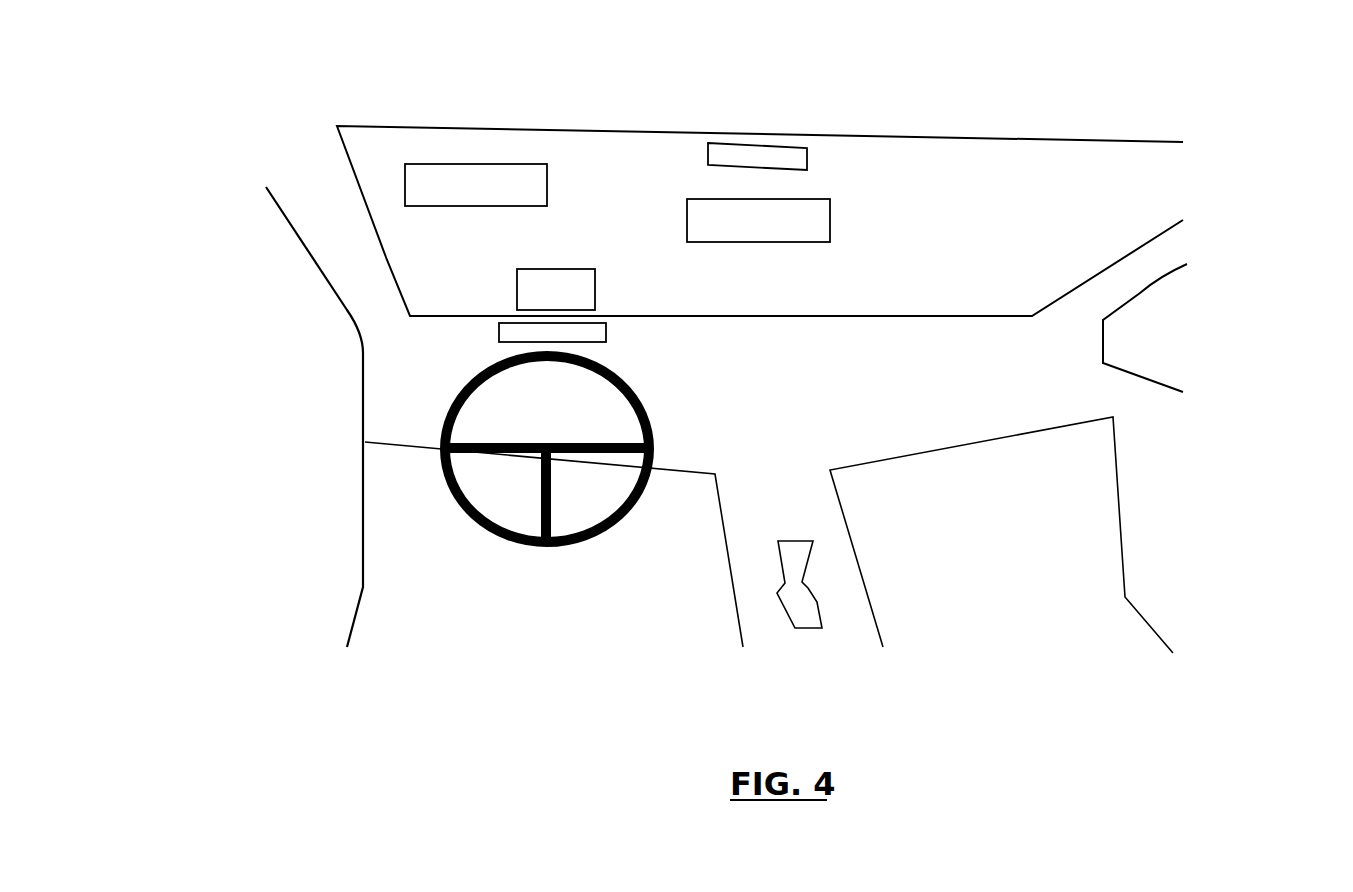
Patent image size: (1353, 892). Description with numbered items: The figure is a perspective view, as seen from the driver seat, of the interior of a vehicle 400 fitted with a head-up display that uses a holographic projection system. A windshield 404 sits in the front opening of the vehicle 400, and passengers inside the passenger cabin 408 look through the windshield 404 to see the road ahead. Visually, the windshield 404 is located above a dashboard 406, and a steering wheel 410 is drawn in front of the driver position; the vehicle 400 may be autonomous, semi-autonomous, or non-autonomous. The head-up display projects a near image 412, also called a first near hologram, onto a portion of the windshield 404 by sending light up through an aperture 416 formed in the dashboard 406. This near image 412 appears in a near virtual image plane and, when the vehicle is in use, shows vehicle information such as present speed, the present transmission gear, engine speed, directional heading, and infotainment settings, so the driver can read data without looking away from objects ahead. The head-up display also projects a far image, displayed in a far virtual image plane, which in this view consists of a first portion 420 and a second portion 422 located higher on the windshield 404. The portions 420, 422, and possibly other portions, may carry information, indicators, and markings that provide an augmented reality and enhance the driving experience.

The vehicle 400 is at (320, 175).
The windshield 404 is at (470, 246).
The dashboard 406 is at (435, 360).
The passenger cabin 408 is at (1043, 267).
The steering wheel 410 is at (628, 385).
The near image 412 is at (503, 283).
The aperture 416 is at (498, 328).
The first portion 420 is at (438, 163).
The second portion 422 is at (693, 198).